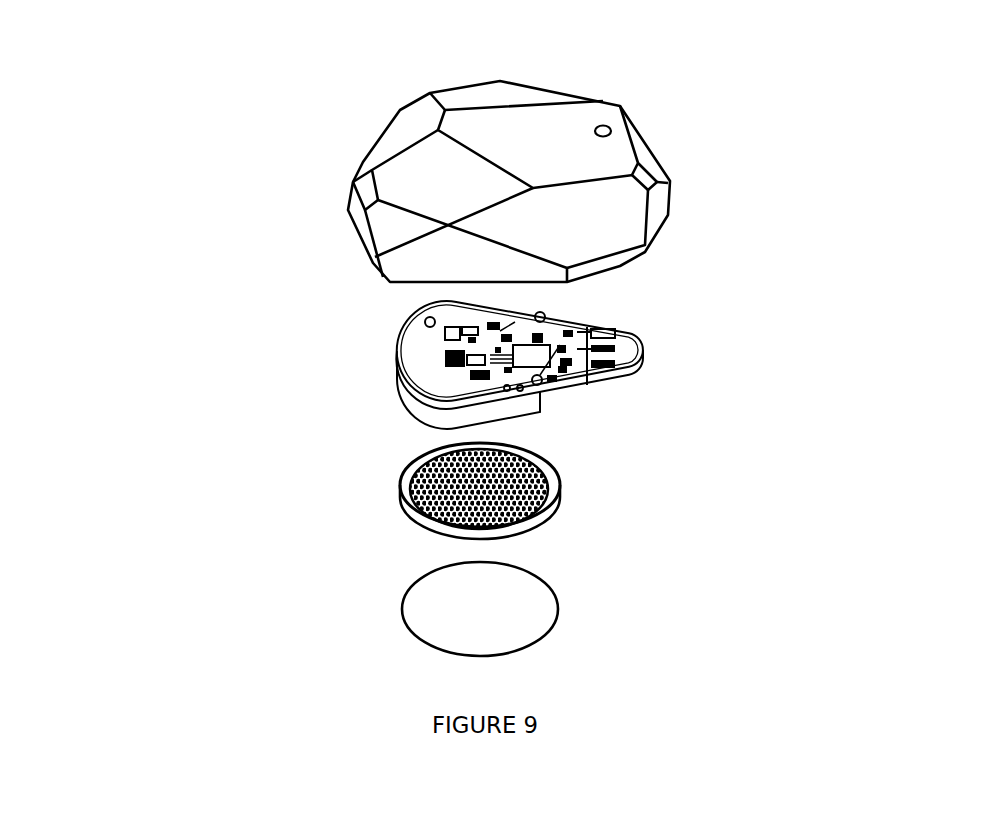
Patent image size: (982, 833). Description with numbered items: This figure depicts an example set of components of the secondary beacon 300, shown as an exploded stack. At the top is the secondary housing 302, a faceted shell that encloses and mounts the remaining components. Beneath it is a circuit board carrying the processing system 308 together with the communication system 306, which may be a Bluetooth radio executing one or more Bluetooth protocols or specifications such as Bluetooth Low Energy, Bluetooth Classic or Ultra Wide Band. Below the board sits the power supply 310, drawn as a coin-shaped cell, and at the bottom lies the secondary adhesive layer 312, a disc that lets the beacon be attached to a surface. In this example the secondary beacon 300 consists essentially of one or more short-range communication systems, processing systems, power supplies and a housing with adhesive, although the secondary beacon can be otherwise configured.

The secondary beacon 300 is at (342, 58).
The secondary housing 302 is at (337, 183).
The communication system 306 is at (628, 340).
The processing system 308 is at (570, 390).
The power supply 310 is at (397, 485).
The secondary adhesive layer 312 is at (397, 587).